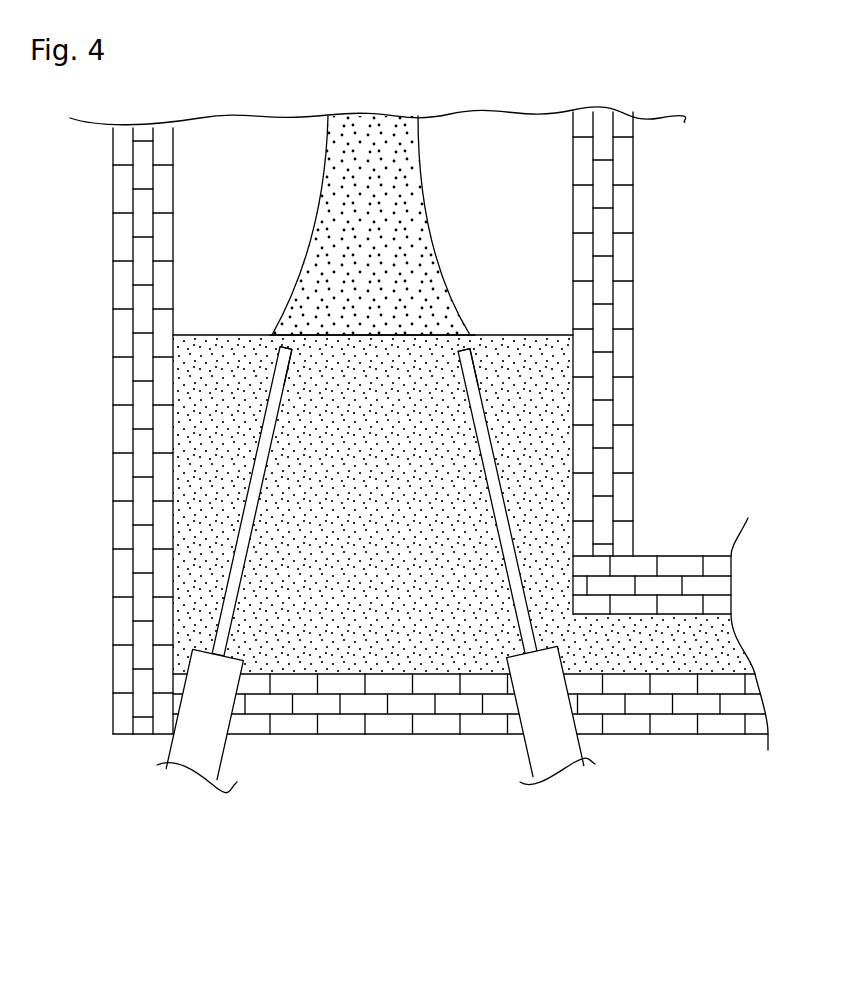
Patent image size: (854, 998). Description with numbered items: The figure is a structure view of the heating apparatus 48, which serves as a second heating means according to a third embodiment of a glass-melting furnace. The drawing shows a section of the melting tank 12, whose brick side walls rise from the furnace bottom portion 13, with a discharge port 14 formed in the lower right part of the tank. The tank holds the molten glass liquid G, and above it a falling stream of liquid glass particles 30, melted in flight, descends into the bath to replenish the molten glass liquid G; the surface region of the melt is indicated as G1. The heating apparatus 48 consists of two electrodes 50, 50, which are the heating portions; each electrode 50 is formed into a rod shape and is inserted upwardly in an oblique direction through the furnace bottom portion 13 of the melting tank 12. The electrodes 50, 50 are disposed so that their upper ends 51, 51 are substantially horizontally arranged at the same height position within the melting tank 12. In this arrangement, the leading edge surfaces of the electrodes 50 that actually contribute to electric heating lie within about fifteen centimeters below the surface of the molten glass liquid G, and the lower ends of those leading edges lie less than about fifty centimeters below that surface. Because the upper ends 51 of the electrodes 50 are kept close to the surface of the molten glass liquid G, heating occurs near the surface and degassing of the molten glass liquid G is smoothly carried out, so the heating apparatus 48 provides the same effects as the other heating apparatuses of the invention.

The melting tank 12 is at (638, 162).
The furnace bottom portion 13 is at (258, 720).
The discharge port 14 is at (673, 567).
The liquid glass particles 30 is at (328, 213).
The heating apparatus 48 is at (180, 780).
The electrode 50 is at (237, 575).
The upper end of electrode 51 is at (277, 383).
The molten glass liquid G is at (410, 643).
The molten glass surface portion G1 is at (330, 357).